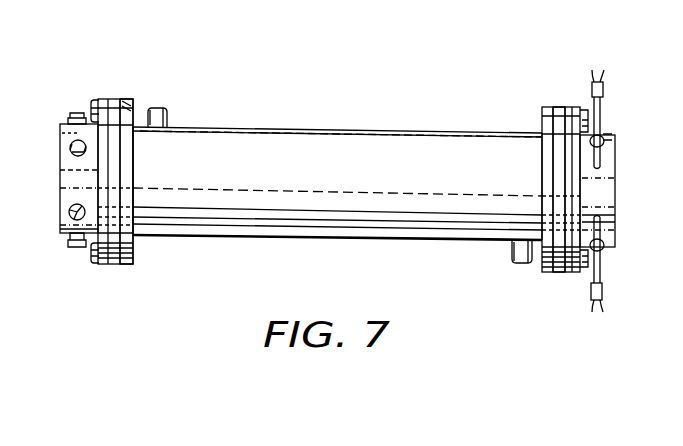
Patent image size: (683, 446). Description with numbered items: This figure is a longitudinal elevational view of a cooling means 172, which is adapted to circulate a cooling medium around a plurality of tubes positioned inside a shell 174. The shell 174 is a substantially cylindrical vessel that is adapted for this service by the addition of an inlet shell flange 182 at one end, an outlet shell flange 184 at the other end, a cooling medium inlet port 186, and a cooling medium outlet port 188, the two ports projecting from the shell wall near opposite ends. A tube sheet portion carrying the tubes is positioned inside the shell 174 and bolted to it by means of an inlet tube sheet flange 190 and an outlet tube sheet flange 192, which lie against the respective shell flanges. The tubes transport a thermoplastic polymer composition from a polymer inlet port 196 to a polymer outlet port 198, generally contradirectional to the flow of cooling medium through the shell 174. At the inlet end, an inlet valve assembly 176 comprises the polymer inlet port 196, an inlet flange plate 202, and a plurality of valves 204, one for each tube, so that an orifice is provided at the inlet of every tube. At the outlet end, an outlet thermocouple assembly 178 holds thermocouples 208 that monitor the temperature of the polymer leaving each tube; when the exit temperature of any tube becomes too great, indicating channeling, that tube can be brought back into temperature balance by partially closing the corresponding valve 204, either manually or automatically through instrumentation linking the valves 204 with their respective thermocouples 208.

The cooling means 172 is at (352, 131).
The shell 174 is at (219, 216).
The inlet valve assembly 176 is at (90, 108).
The outlet thermocouple assembly 178 is at (605, 133).
The inlet shell flange 182 is at (133, 107).
The outlet shell flange 184 is at (545, 122).
The cooling medium inlet port 186 is at (512, 259).
The cooling medium outlet port 188 is at (167, 112).
The inlet tube sheet flange 190 is at (116, 107).
The outlet tube sheet flange 192 is at (562, 120).
The polymer inlet port 196 is at (72, 170).
The polymer outlet port 198 is at (584, 190).
The inlet flange plate 202 is at (103, 263).
The valves 204 is at (70, 143).
The thermocouples 208 is at (603, 90).